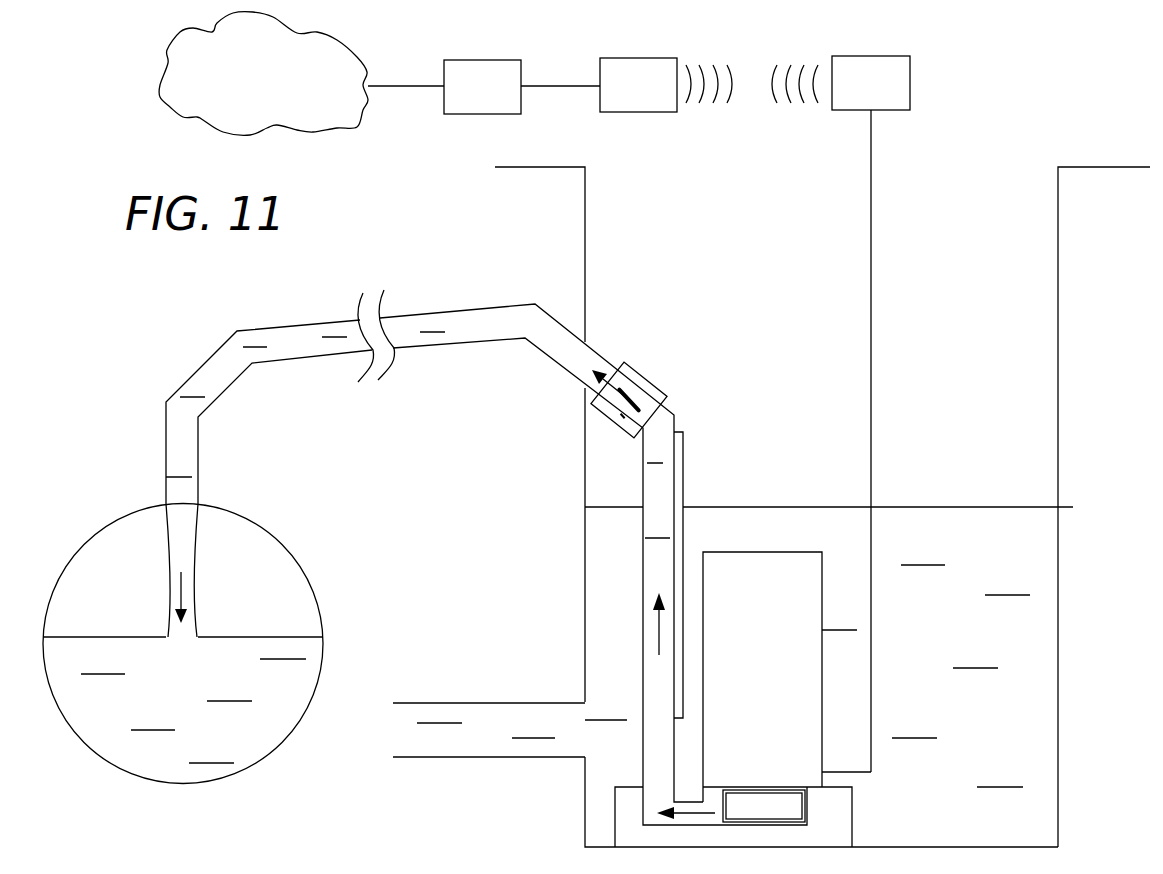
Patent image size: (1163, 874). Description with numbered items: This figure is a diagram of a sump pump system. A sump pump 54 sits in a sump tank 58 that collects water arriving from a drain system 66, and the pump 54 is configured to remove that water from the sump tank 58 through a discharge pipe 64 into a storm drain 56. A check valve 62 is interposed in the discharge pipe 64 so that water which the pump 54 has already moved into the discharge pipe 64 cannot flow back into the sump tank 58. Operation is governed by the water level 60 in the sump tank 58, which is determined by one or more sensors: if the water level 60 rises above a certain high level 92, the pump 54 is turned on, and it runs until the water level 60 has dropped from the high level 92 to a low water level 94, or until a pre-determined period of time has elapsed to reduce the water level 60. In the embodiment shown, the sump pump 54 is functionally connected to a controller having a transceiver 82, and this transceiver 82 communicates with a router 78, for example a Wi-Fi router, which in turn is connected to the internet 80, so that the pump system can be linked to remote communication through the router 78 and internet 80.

The sump pump 54 is at (778, 682).
The storm drain 56 is at (306, 567).
The sump tank 58 is at (585, 197).
The water level 60 is at (900, 507).
The check valve 62 is at (642, 372).
The discharge pipe 64 is at (445, 309).
The drain system 66 is at (495, 703).
The router 78 is at (499, 101).
The internet 80 is at (279, 87).
The transceiver 82 is at (623, 99).
The high level 92 is at (1065, 507).
The low water level 94 is at (1058, 728).